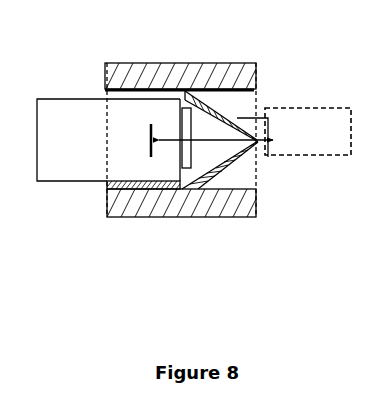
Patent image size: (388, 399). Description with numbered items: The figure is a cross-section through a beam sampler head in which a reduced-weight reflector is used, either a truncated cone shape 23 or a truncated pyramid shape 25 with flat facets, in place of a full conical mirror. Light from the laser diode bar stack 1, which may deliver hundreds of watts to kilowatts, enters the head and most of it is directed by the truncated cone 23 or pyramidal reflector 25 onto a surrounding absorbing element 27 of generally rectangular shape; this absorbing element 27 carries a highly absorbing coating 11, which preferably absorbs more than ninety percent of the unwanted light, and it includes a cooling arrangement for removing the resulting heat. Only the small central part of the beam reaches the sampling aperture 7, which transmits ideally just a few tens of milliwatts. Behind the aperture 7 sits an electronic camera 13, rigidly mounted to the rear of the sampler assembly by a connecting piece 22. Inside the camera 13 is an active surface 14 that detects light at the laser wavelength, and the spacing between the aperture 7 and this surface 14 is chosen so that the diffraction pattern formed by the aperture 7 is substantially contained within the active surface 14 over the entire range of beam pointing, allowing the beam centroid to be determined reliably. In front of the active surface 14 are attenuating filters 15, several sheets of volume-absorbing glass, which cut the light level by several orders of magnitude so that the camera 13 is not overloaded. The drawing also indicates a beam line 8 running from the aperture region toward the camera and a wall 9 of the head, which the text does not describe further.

The laser diode bar stack 1 is at (306, 157).
The sampling aperture 7 is at (262, 147).
The light beam axis 8 is at (216, 132).
The upper reflecting wall 9 is at (231, 94).
The absorbing coating 11 is at (209, 90).
The electronic camera 13 is at (85, 99).
The active surface 14 is at (151, 155).
The attenuating filters 15 is at (183, 129).
The connecting piece 22 is at (140, 190).
The truncated cone shape 23 is at (222, 173).
The truncated pyramid shape 25 is at (225, 199).
The absorbing element 27 is at (172, 204).